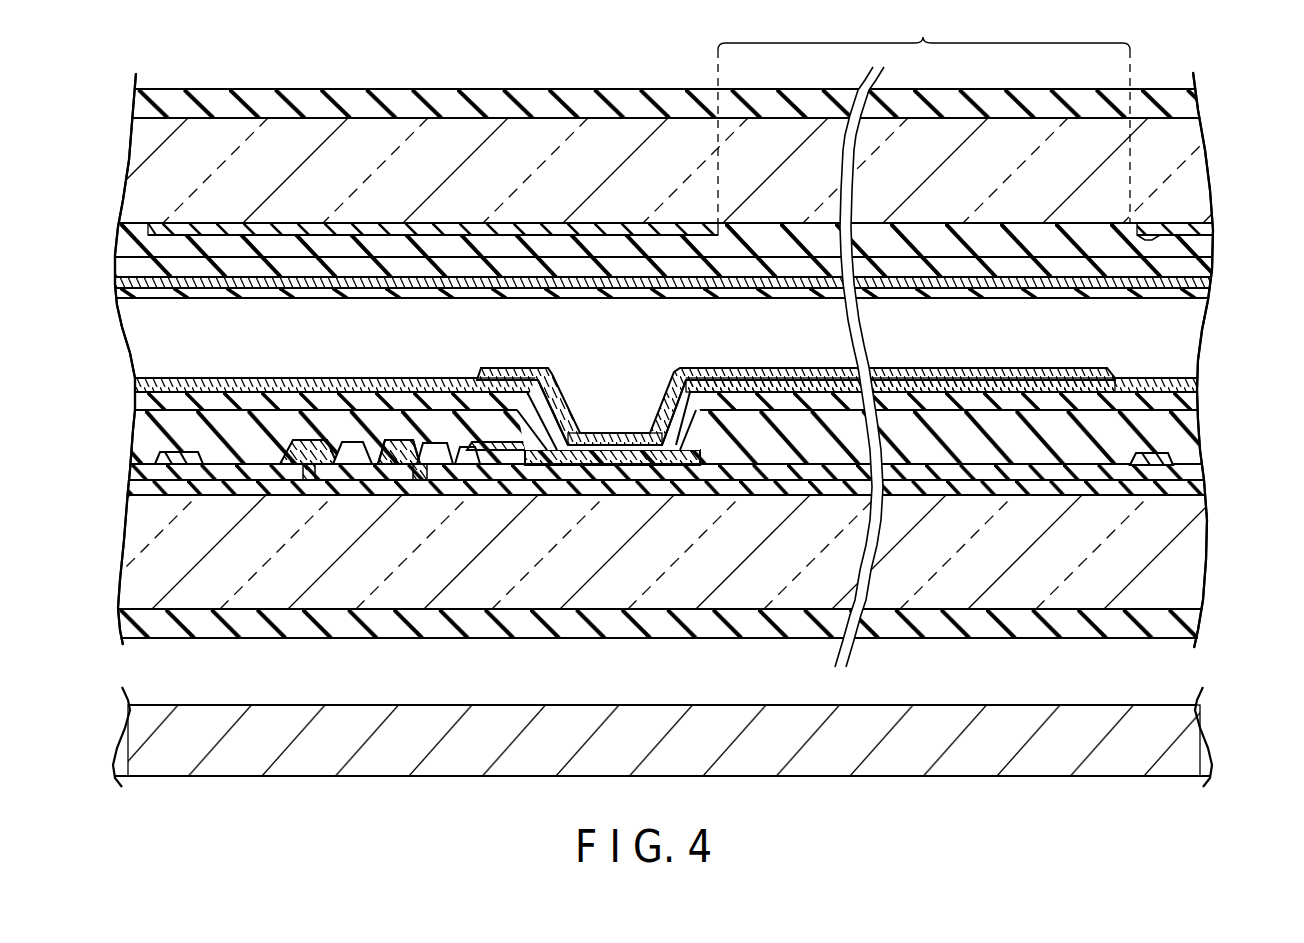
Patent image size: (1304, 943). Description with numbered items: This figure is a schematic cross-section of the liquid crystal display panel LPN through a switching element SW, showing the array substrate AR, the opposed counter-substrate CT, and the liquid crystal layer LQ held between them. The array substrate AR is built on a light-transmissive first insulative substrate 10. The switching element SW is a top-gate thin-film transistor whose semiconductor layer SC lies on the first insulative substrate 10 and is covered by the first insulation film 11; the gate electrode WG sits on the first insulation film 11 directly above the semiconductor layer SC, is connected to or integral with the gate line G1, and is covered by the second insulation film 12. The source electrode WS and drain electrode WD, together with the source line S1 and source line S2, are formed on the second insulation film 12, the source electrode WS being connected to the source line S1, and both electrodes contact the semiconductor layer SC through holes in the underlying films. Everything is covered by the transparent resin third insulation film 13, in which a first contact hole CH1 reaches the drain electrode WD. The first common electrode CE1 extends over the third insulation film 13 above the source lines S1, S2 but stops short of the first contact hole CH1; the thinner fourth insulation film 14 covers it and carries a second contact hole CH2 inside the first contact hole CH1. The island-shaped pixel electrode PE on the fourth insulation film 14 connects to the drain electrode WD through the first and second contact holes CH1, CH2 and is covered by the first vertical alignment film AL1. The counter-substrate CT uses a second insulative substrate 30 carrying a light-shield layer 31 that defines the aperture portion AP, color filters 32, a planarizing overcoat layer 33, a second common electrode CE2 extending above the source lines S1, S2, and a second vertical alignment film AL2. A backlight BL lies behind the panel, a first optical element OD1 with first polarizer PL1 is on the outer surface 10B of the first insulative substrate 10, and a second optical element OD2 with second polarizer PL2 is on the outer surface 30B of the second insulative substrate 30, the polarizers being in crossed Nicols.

The second insulative substrate 30 is at (148, 157).
The light-shield layer 31 is at (150, 229).
The color filters 32 is at (113, 257).
The overcoat layer 33 is at (127, 286).
The second vertical alignment film AL2 is at (128, 295).
The second common electrode CE2 is at (1135, 290).
The liquid crystal layer LQ is at (145, 333).
The first vertical alignment film AL1 is at (150, 378).
The fourth insulation film 14 is at (145, 392).
The third insulation film 13 is at (150, 430).
The second insulation film 12 is at (150, 467).
The first insulation film 11 is at (150, 490).
The first insulative substrate 10 is at (150, 580).
The source line S1 is at (185, 466).
The source line S2 is at (1160, 455).
The switching element SW is at (479, 506).
The semiconductor layer SC is at (362, 482).
The gate electrode WG is at (400, 482).
The gate line G1 is at (399, 452).
The source electrode WS is at (325, 440).
The drain electrode WD is at (440, 447).
The first contact hole CH1 is at (548, 418).
The second contact hole CH2 is at (585, 432).
The pixel electrode PE is at (660, 372).
The first common electrode CE1 is at (1118, 378).
The aperture portion AP is at (924, 113).
The outer surface 30B is at (1163, 100).
The second optical element OD2 is at (1195, 100).
The second polarizer PL2 is at (665, 103).
The liquid crystal display panel LPN is at (1214, 156).
The counter-substrate CT is at (1196, 204).
The array substrate AR is at (1224, 541).
The first optical element OD1 is at (1195, 625).
The first polarizer PL1 is at (665, 623).
The outer surface 10B is at (1158, 626).
The backlight BL is at (1212, 765).